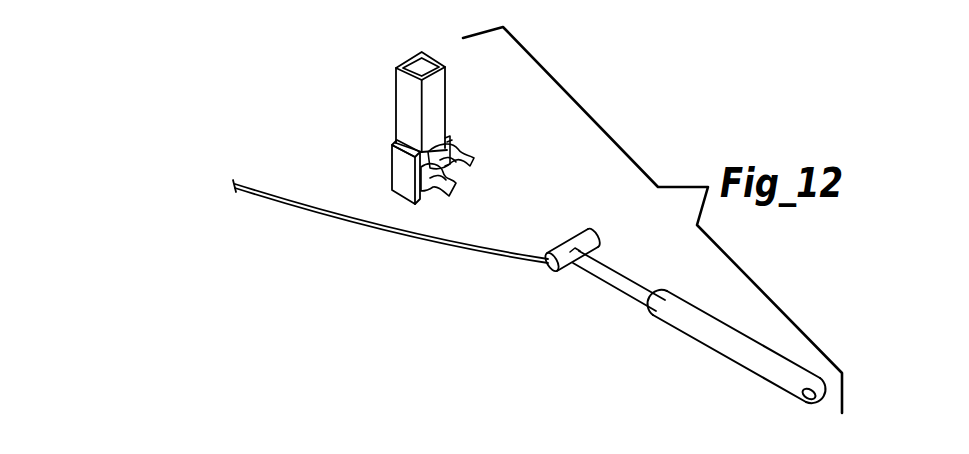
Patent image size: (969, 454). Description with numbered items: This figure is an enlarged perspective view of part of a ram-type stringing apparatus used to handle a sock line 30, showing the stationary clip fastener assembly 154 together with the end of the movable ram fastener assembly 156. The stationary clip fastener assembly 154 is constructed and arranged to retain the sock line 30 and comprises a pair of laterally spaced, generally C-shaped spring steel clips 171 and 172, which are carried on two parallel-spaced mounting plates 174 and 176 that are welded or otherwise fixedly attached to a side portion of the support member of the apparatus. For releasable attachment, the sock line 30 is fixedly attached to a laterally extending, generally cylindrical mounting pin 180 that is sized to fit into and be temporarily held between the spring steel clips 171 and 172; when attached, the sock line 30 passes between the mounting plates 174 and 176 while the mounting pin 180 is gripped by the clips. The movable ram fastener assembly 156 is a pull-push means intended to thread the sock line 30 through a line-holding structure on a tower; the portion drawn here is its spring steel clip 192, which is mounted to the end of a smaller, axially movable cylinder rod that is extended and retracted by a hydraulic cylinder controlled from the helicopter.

The sock line 30 is at (373, 229).
The stationary clip fastener assembly 154 is at (492, 157).
The movable ram fastener assembly 156 is at (624, 323).
The spring steel clip 171 is at (441, 196).
The spring steel clip 172 is at (472, 160).
The mounting plate 174 is at (392, 168).
The mounting plate 176 is at (452, 138).
The mounting pin 180 is at (598, 240).
The spring steel clip 192 is at (572, 250).